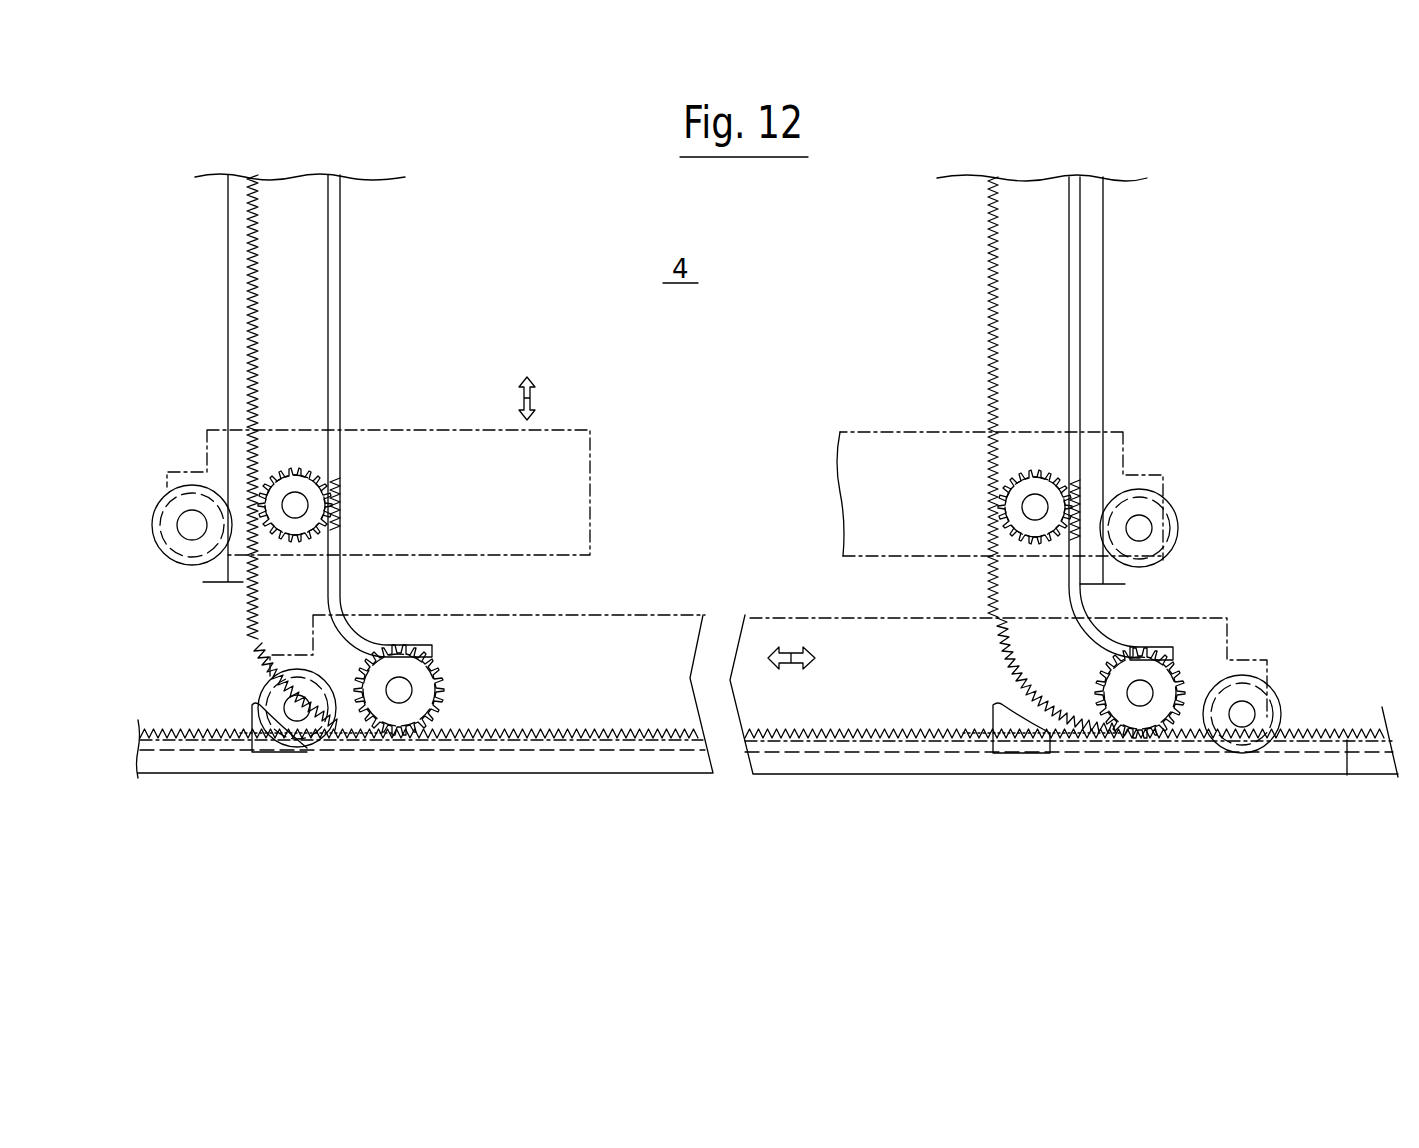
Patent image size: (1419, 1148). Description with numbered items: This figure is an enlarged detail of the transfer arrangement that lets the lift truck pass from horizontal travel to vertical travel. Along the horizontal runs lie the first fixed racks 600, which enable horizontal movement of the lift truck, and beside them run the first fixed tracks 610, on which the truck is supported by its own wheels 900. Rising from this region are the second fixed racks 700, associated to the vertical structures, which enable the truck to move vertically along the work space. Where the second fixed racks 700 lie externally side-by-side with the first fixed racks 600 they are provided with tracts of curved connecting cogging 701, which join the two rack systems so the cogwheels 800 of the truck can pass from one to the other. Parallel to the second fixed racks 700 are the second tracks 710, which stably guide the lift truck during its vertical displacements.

The first fixed racks 600 is at (607, 773).
The first fixed tracks 610 is at (195, 747).
The second fixed racks 700 is at (259, 373).
The tracts of curved connecting cogging 701 is at (272, 657).
The second tracks 710 is at (330, 633).
The cogwheels 800 is at (420, 708).
The wheels 900 is at (270, 683).